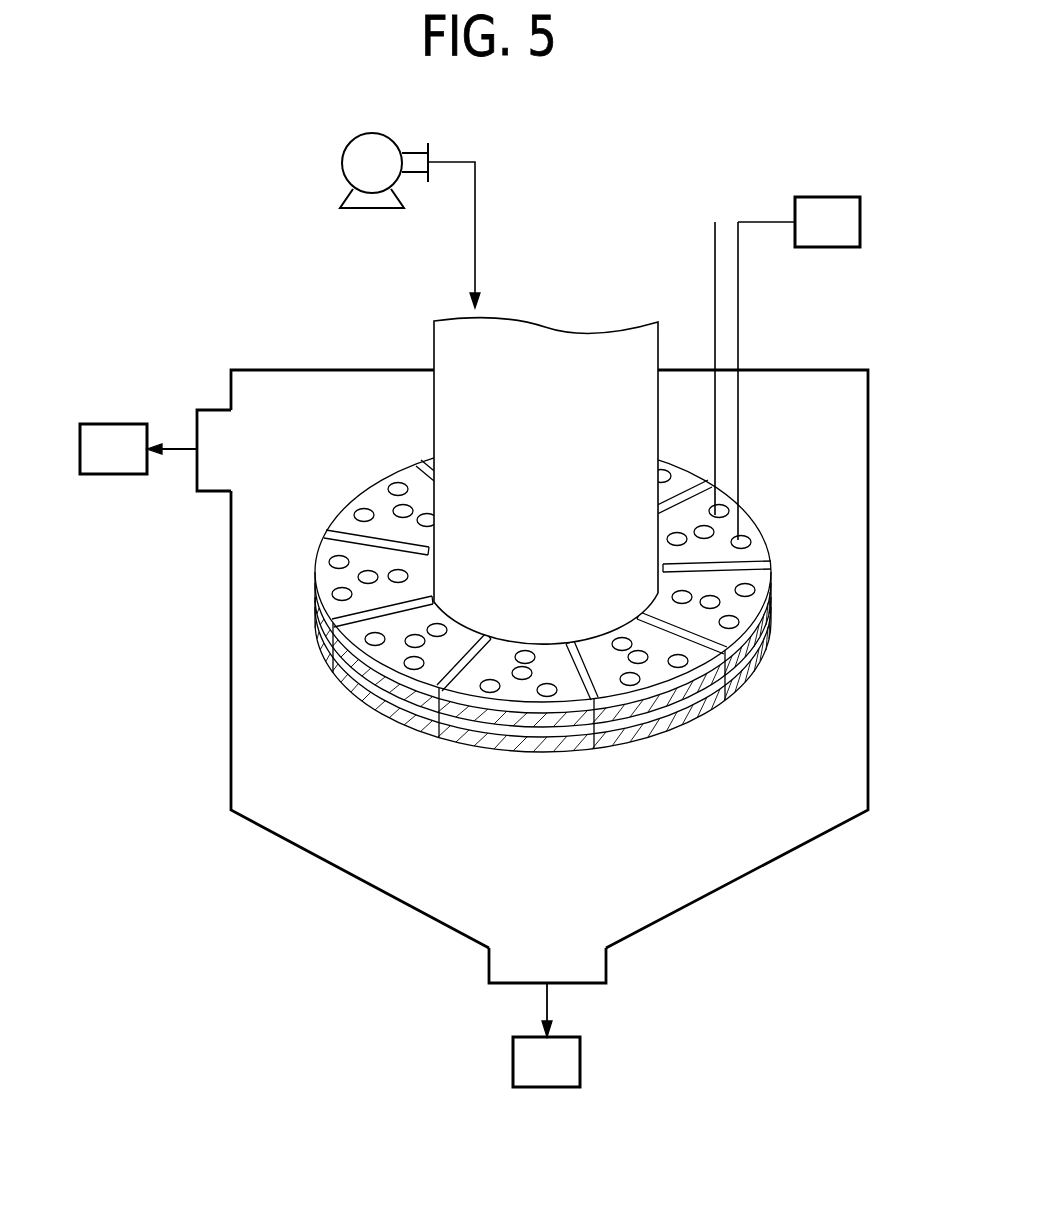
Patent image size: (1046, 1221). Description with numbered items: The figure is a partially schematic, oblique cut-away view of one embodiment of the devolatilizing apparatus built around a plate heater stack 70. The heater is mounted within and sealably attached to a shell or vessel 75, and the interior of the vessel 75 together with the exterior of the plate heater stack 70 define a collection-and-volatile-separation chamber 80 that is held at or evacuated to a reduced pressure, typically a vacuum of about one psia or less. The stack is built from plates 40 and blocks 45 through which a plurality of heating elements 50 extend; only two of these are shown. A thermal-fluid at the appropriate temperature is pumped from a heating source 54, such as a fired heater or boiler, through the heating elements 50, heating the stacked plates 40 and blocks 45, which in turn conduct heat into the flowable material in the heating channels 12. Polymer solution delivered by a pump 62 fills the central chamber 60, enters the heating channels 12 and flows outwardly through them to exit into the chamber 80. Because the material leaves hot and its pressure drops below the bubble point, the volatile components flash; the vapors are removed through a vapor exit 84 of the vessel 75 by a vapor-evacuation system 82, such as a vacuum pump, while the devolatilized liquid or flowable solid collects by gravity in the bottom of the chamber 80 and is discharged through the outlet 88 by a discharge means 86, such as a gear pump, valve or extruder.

The heating channels 12 is at (493, 647).
The plates 40 is at (364, 505).
The blocks 45 is at (767, 605).
The heating elements 50 is at (738, 298).
The heating source 54 is at (813, 238).
The central chamber 60 is at (533, 492).
The pump 62 is at (352, 160).
The plate heater stack 70 is at (620, 596).
The vessel 75 is at (869, 688).
The collection-and-volatile-separation chamber 80 is at (533, 832).
The vapor-evacuation system 82 is at (99, 465).
The vapor exit 84 is at (205, 449).
The discharge means 86 is at (533, 1078).
The outlet 88 is at (547, 967).